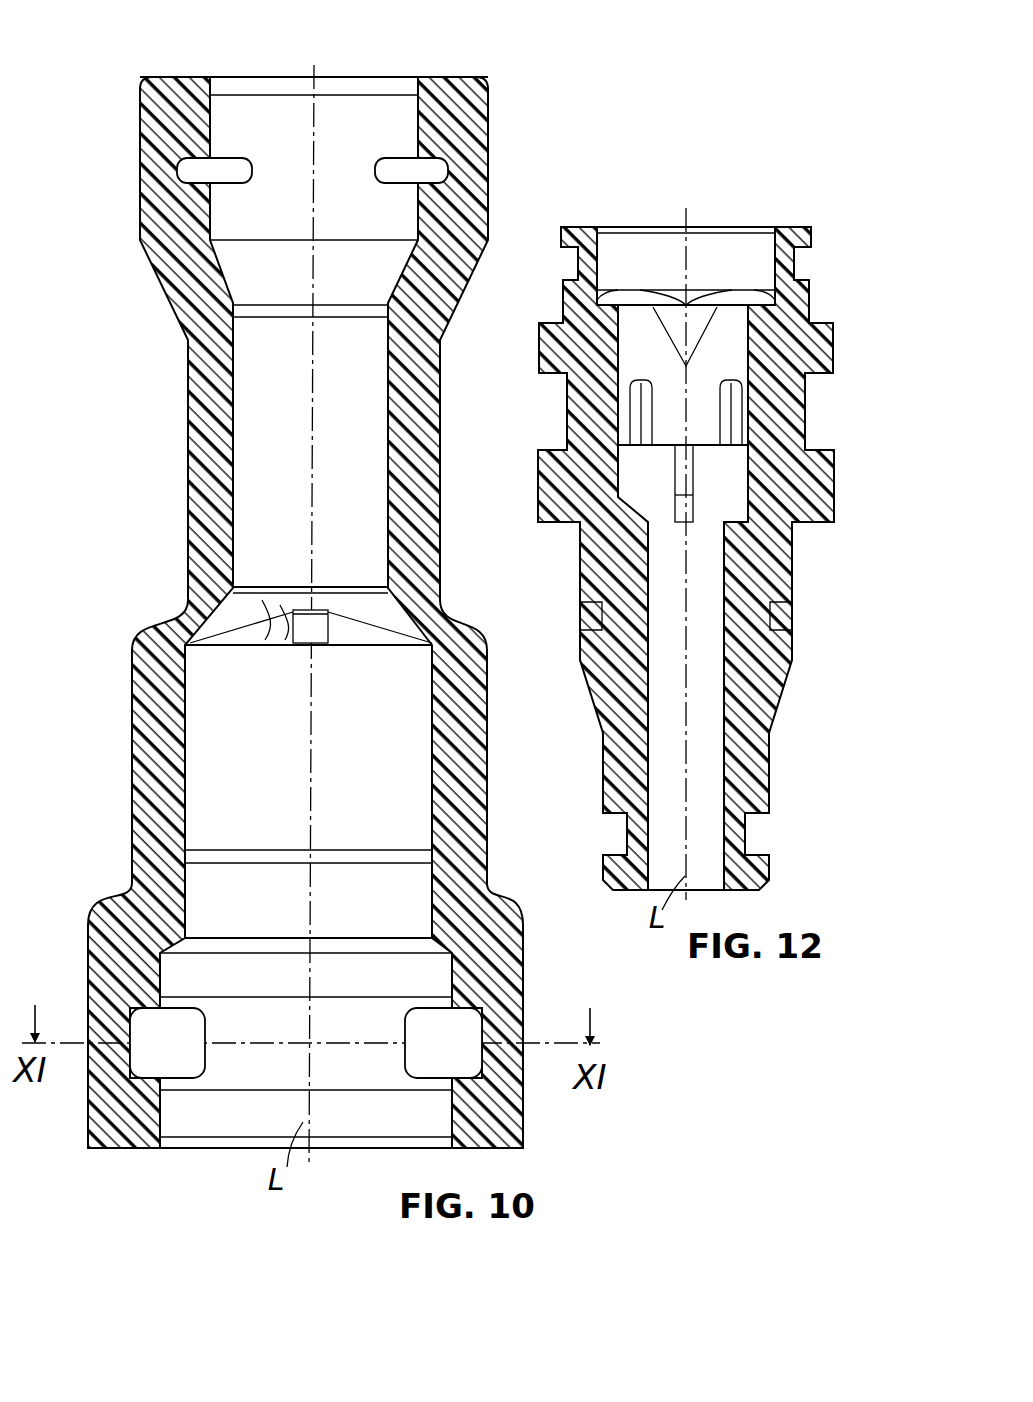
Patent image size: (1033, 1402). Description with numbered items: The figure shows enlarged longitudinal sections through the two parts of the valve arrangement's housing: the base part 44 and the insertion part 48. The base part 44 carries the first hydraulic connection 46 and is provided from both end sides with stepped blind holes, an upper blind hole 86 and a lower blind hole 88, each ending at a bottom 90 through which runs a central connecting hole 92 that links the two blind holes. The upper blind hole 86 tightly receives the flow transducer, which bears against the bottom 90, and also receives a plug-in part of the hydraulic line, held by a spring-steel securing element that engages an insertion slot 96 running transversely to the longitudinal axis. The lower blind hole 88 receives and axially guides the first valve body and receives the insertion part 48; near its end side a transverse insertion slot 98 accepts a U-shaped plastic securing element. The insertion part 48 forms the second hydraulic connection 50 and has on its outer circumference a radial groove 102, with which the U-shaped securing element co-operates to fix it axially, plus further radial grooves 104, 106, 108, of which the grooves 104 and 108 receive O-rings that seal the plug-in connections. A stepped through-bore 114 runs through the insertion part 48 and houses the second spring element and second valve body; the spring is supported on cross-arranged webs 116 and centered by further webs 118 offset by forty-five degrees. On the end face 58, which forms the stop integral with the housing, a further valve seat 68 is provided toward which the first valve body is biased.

In FIG. 10, the base part 44 is at (130, 718).
In FIG. 10, the first hydraulic connection 46 is at (468, 95).
In FIG. 10, the upper blind hole 86 is at (250, 463).
In FIG. 10, the lower blind hole 88 is at (220, 765).
In FIG. 10, the bottom 90 is at (267, 603).
In FIG. 10, the central connecting hole 92 is at (290, 605).
In FIG. 10, the insertion slot 96 is at (222, 172).
In FIG. 10, the insertion slot 98 is at (192, 1056).
In FIG. 12, the insertion part 48 is at (590, 685).
In FIG. 12, the second hydraulic connection 50 is at (612, 888).
In FIG. 12, the end face 58 is at (577, 228).
In FIG. 12, the further valve seat 68 is at (784, 225).
In FIG. 12, the radial groove 102 is at (565, 400).
In FIG. 12, the radial groove 104 is at (578, 262).
In FIG. 12, the radial groove 106 is at (602, 617).
In FIG. 12, the radial groove 108 is at (627, 836).
In FIG. 12, the stepped through-bore 114 is at (700, 763).
In FIG. 12, the webs 116 is at (628, 475).
In FIG. 12, the further webs 118 is at (717, 413).